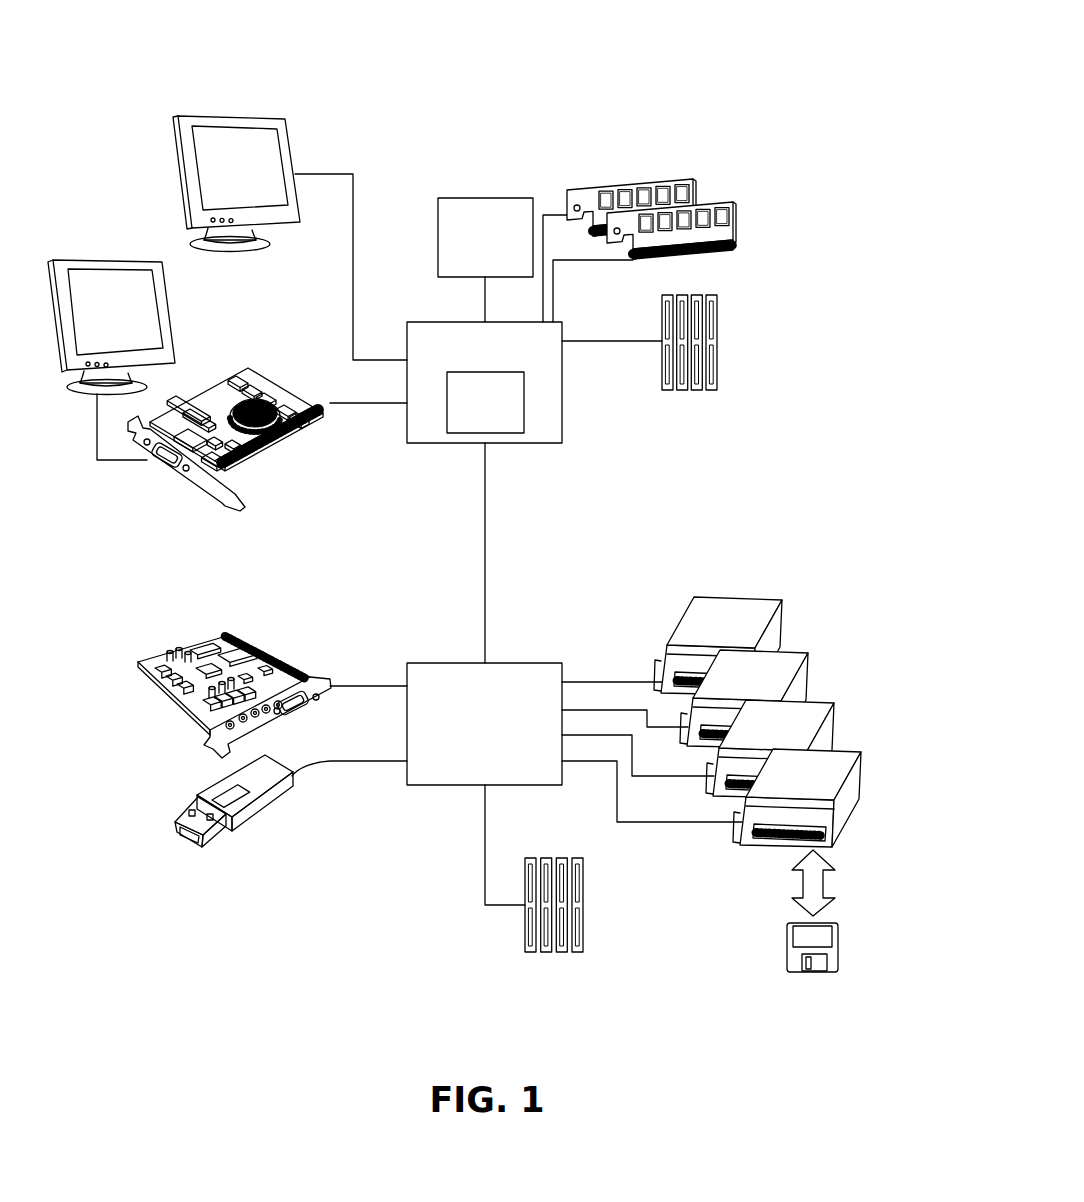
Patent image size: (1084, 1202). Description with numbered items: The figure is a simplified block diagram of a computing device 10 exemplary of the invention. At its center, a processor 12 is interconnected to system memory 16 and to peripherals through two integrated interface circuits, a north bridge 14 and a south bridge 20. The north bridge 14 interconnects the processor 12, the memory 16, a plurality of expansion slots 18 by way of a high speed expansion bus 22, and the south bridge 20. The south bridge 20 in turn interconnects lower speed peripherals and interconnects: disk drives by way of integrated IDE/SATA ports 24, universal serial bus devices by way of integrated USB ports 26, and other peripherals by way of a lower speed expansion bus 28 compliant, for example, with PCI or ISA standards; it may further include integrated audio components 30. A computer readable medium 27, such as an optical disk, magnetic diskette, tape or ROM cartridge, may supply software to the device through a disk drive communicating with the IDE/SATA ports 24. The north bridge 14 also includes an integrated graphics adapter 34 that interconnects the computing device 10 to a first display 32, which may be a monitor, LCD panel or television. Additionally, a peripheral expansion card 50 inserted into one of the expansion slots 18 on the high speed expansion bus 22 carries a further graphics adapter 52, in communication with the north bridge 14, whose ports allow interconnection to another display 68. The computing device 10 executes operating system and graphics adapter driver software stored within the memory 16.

The computing device 10 is at (707, 71).
The processor 12 is at (475, 260).
The north bridge 14 is at (475, 347).
The system memory 16 is at (724, 197).
The expansion slots 18 is at (745, 353).
The south bridge 20 is at (475, 734).
The high speed expansion bus 22 is at (340, 403).
The integrated IDE/SATA ports 24 is at (803, 627).
The integrated universal serial bus (USB) ports 26 is at (190, 862).
The computer readable medium 27 is at (787, 948).
The lower speed expansion bus 28 is at (598, 912).
The integrated audio components 30 is at (252, 623).
The first display 32 is at (228, 115).
The integrated graphics adapter 34 is at (475, 415).
The peripheral expansion card 50 is at (225, 442).
The graphics adapter 52 is at (272, 412).
The display 68 is at (97, 258).